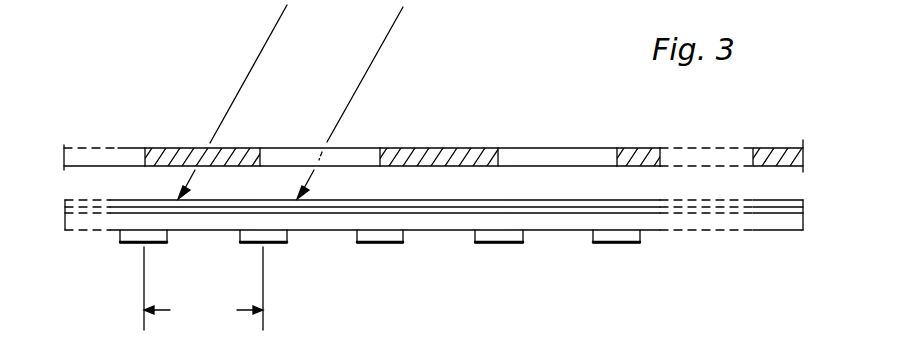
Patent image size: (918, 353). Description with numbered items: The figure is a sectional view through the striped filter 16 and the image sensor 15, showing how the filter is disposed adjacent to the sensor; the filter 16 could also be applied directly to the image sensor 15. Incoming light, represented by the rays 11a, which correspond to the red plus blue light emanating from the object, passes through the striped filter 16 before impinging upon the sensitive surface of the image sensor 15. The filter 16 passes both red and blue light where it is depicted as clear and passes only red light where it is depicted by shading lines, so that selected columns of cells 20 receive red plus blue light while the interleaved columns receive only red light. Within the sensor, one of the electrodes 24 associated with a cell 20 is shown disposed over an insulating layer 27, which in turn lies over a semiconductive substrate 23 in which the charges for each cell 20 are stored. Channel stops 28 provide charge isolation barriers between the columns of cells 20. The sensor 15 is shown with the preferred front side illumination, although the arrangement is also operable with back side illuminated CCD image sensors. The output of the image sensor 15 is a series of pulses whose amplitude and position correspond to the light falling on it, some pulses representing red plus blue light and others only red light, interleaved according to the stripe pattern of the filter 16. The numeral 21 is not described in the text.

The ray 11a is at (245, 83).
The striped filter 16 is at (803, 158).
The image sensor 15 is at (471, 235).
The electrode 24 is at (465, 200).
The insulating layer 27 is at (327, 213).
The substrate 21 is at (385, 255).
The semiconductive substrate 23 is at (783, 213).
The channel stops 28 is at (627, 241).
The cell 20 is at (213, 348).